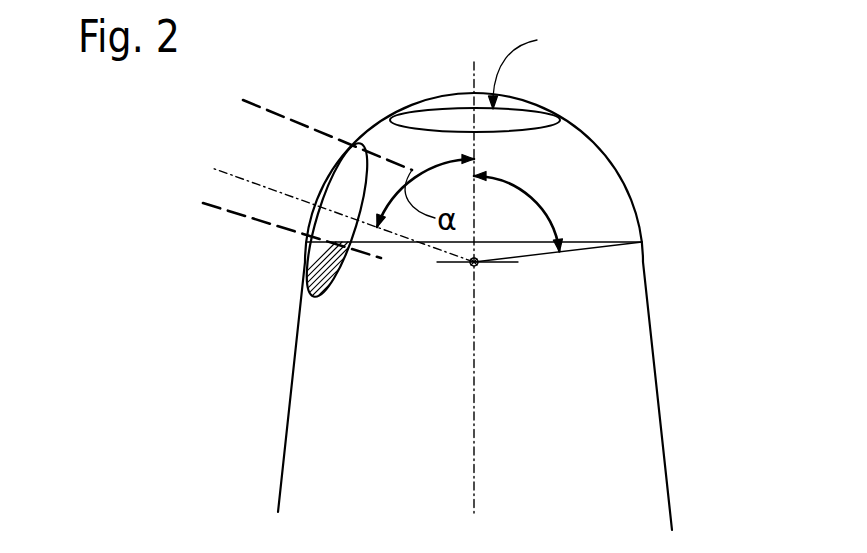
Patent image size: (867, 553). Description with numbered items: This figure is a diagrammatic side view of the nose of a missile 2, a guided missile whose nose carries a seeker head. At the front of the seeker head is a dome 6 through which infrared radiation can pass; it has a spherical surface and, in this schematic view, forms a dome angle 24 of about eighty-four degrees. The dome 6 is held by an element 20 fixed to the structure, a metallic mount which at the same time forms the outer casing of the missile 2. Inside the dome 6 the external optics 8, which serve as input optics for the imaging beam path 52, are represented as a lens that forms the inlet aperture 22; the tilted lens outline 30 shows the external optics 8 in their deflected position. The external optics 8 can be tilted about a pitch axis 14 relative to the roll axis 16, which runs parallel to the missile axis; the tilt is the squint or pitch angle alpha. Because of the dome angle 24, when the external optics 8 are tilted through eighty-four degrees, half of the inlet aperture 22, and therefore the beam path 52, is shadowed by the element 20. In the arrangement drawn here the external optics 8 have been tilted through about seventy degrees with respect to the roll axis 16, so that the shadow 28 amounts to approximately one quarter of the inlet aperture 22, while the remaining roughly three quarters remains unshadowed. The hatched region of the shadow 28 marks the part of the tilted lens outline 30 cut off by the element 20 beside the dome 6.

The missile 2 is at (647, 268).
The dome 6 is at (540, 102).
The external optics 8 is at (522, 66).
The pitch axis 14 is at (471, 264).
The roll axis 16 is at (473, 353).
The element fixed to the structure 20 is at (306, 252).
The inlet aperture 22 is at (432, 114).
The dome angle 24 is at (537, 195).
The shadow 28 is at (313, 272).
The lateral slot 30 is at (352, 182).
The beam path 52 is at (208, 203).